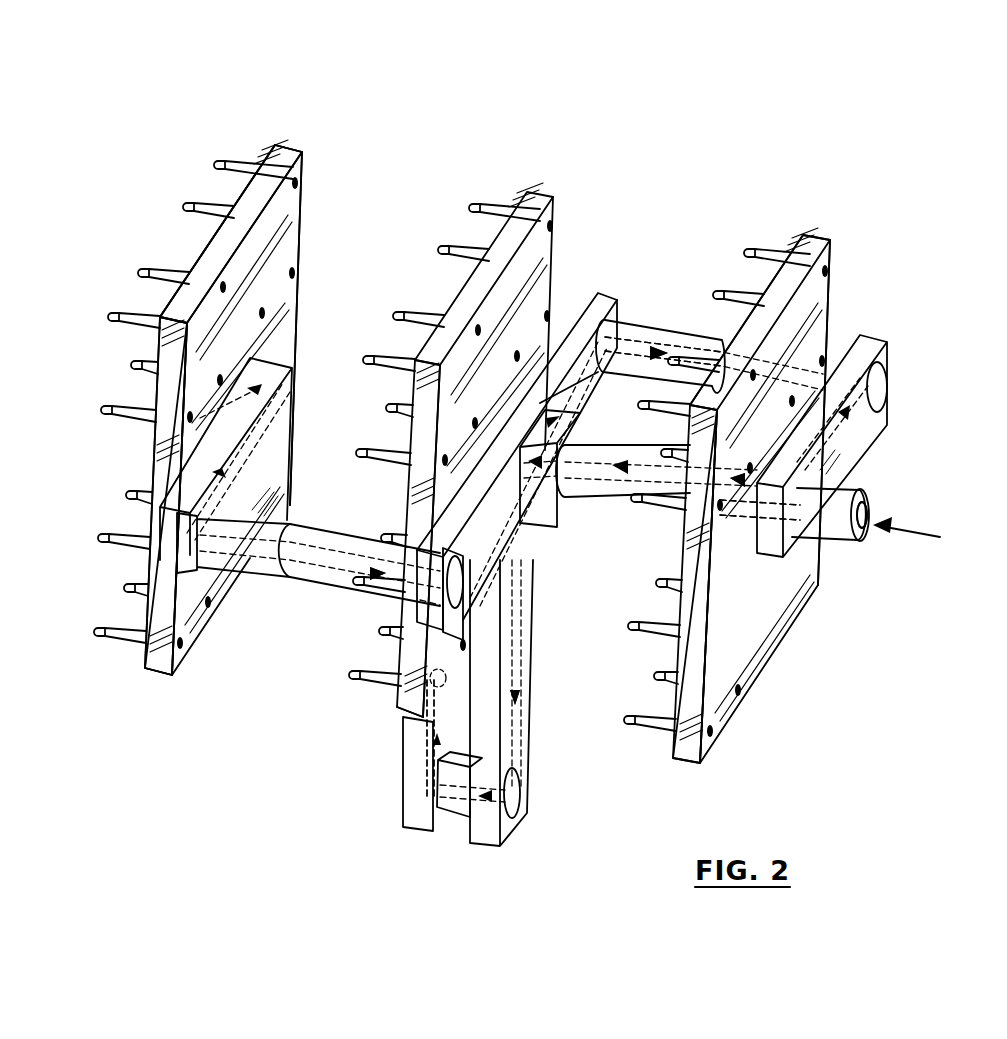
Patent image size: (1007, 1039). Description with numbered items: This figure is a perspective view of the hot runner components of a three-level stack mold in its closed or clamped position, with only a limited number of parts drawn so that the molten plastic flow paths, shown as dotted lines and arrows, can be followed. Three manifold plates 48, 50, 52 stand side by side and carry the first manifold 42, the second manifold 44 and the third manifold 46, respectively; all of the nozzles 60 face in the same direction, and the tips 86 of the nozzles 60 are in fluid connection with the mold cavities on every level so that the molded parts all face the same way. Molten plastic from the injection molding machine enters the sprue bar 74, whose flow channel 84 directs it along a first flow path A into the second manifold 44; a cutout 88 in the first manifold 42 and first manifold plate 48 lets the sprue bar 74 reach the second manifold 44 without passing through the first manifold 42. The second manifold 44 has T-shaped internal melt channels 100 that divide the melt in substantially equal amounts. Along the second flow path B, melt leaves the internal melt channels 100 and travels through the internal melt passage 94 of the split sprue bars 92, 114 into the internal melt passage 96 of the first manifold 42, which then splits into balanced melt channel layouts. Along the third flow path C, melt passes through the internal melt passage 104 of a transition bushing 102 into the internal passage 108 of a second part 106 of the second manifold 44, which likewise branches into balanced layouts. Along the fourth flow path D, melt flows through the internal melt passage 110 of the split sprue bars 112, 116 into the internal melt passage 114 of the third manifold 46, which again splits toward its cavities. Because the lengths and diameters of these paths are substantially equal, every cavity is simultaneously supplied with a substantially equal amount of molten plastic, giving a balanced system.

The first manifold 42 is at (862, 330).
The second manifold 44 is at (600, 293).
The third manifold 46 is at (297, 330).
The first manifold plate 48 is at (805, 235).
The second manifold plate 50 is at (540, 190).
The third manifold plate 52 is at (300, 150).
The nozzles 60 is at (232, 152).
The sprue bar 74 is at (613, 497).
The flow channel 84 is at (838, 522).
The tips 86 is at (213, 163).
The cutout 88 is at (800, 515).
The split sprue bar 92 is at (620, 325).
The internal melt passage 94 is at (680, 352).
The internal melt passage 96 is at (890, 400).
The internal melt channels 100 is at (570, 363).
The transition bushing 102 is at (460, 817).
The internal melt passage 104 is at (452, 813).
The second part 106 is at (410, 818).
The internal passage 108 is at (433, 733).
The internal melt passage 110 is at (320, 565).
The split sprue bar 112 is at (338, 585).
The internal melt passage 114 is at (268, 450).
The split sprue bar 116 is at (250, 580).
The first flow path A is at (735, 500).
The second flow path B is at (642, 347).
The third flow path C is at (430, 773).
The fourth flow path D is at (195, 545).